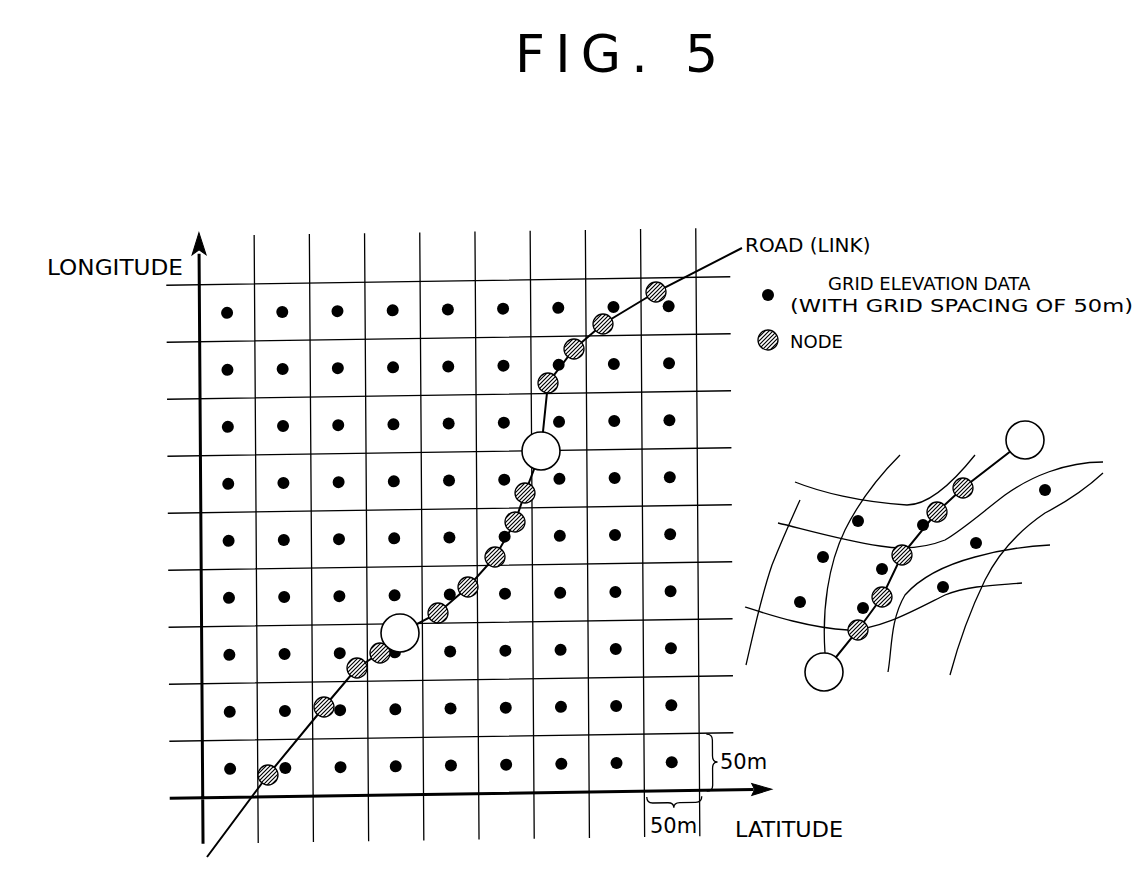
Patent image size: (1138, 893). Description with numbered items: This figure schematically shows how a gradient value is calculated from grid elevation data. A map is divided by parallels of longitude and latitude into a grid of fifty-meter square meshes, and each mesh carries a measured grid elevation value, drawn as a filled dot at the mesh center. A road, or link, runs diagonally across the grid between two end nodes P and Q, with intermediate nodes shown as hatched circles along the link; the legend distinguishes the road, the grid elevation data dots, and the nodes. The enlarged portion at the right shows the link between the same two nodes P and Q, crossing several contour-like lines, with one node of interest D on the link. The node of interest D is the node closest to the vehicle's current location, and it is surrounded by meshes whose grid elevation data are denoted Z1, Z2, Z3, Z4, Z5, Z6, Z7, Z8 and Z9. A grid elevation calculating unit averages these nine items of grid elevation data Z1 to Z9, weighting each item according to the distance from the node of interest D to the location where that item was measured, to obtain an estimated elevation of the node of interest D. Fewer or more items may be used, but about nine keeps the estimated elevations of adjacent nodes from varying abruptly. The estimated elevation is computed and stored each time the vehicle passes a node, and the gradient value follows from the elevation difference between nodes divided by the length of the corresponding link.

The start node of road link P is at (612, 652).
The end node of road link Q is at (783, 445).
The grid elevation data Z1 is at (869, 573).
The grid elevation data Z2 is at (851, 614).
The grid elevation data Z3 is at (787, 607).
The grid elevation data Z4 is at (809, 562).
The grid elevation data Z5 is at (844, 526).
The grid elevation data Z6 is at (907, 531).
The grid elevation data Z7 is at (1031, 497).
The grid elevation data Z8 is at (962, 551).
The grid elevation data Z9 is at (930, 596).
The node of interest D is at (895, 575).